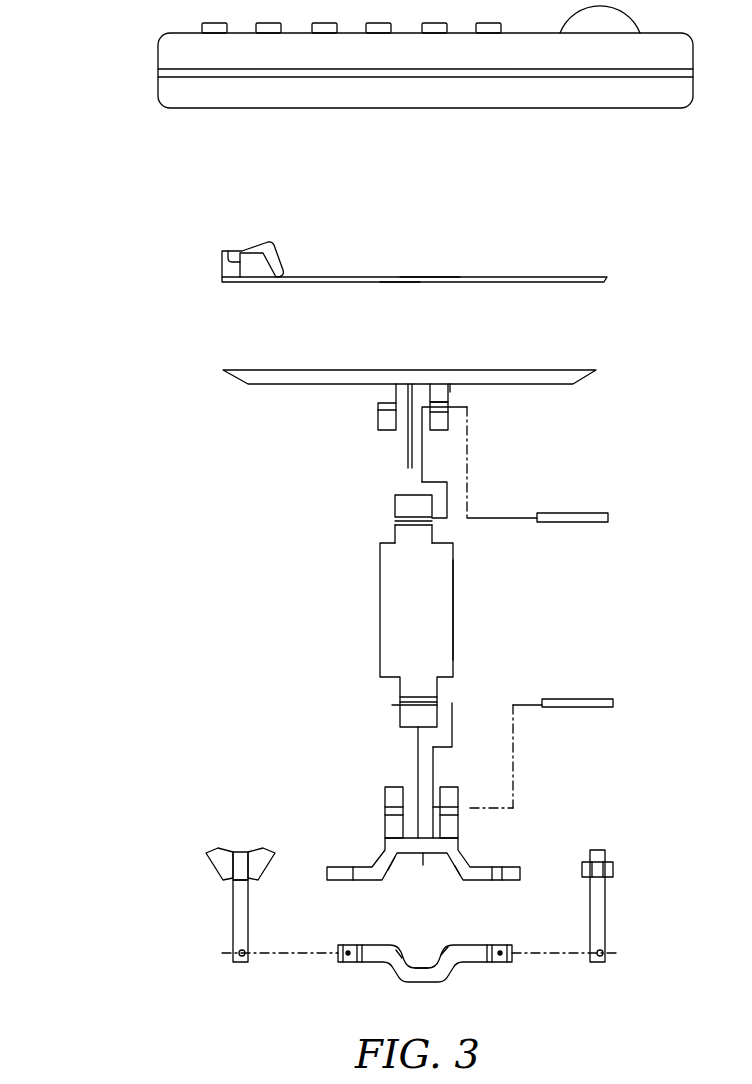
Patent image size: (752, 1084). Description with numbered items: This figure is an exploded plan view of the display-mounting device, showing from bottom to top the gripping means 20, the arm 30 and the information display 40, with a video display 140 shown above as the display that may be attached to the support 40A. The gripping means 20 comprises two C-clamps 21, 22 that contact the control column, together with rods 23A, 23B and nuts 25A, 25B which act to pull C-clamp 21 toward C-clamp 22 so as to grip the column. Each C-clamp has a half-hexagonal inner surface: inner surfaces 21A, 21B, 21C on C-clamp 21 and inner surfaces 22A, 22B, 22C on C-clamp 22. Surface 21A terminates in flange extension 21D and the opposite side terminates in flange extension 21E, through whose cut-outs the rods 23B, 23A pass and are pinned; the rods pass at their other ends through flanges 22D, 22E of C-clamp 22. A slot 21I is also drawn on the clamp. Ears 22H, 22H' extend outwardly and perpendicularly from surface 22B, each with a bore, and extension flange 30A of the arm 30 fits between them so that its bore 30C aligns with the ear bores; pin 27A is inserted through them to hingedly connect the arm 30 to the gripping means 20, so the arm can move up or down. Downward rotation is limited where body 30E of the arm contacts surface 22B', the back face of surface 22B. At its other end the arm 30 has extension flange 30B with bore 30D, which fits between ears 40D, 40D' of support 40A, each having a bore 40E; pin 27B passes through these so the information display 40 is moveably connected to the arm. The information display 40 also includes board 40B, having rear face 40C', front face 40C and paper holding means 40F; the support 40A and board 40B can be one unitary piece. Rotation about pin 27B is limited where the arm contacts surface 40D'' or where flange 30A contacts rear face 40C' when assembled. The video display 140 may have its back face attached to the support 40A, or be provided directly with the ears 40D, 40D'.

The video display 140 is at (131, 63).
The information display 40 is at (176, 285).
The support 40A is at (596, 377).
The board 40B is at (426, 302).
The front face 40C is at (468, 224).
The rear face 40C' is at (364, 307).
The ear 40D is at (327, 413).
The ear 40D' is at (502, 432).
The surface 40D'' is at (358, 431).
The bore 40E is at (378, 410).
The paper holding means 40F is at (270, 224).
The arm 30 is at (380, 637).
The extension flange 30A is at (474, 682).
The extension flange 30B is at (393, 532).
The bore 30C is at (358, 702).
The bore 30D is at (344, 500).
The body 30E is at (442, 643).
The pin 27A is at (613, 703).
The pin 27B is at (608, 518).
The gripping means 20 is at (76, 870).
The C-clamp 21 is at (420, 978).
The inner surface 21A is at (400, 949).
The inner surface 21B is at (422, 968).
The inner surface 21C is at (477, 932).
The flange extension 21D is at (319, 939).
The flange extension 21E is at (483, 945).
The block slot 21I is at (385, 812).
The C-clamp 22 is at (385, 847).
The inner surface 22A is at (386, 873).
The inner surface 22B is at (426, 872).
The surface 22B' is at (356, 779).
The inner surface 22C is at (462, 880).
The flange 22D is at (310, 888).
The flange 22E is at (500, 882).
The ear 22H is at (340, 795).
The ear 22H' is at (512, 793).
The rod 23A is at (605, 925).
The rod 23B is at (233, 908).
The nut 25A is at (613, 870).
The nut 25B is at (238, 829).